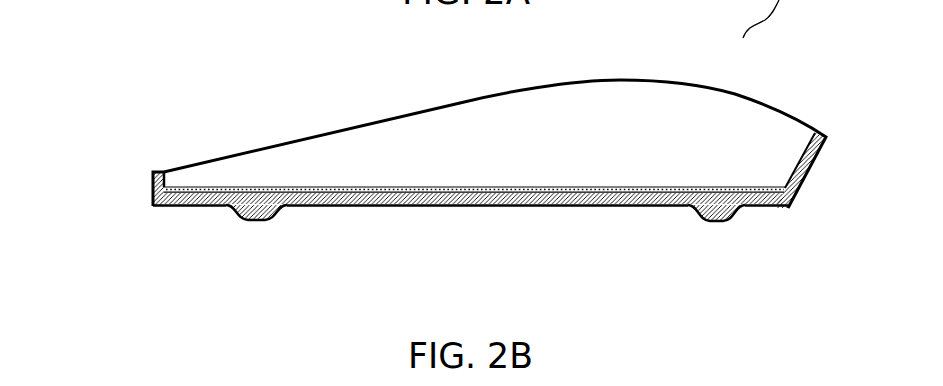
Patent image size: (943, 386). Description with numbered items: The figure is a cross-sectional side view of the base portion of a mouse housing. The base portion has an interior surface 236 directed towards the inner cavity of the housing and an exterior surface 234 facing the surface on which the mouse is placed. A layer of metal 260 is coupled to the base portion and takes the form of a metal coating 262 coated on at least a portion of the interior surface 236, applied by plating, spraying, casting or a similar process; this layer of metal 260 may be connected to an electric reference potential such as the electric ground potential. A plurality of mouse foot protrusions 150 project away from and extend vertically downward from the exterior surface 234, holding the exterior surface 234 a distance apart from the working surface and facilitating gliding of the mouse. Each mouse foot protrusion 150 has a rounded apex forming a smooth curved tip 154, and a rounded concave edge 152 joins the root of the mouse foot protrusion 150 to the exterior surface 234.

The mouse foot protrusion 150 is at (212, 253).
The rounded concave edge 152 is at (232, 208).
The tip 154 is at (247, 215).
The exterior surface 234 is at (483, 207).
The interior surface 236 is at (542, 190).
The layer of metal 260 is at (153, 190).
The metal coating 262 is at (629, 190).